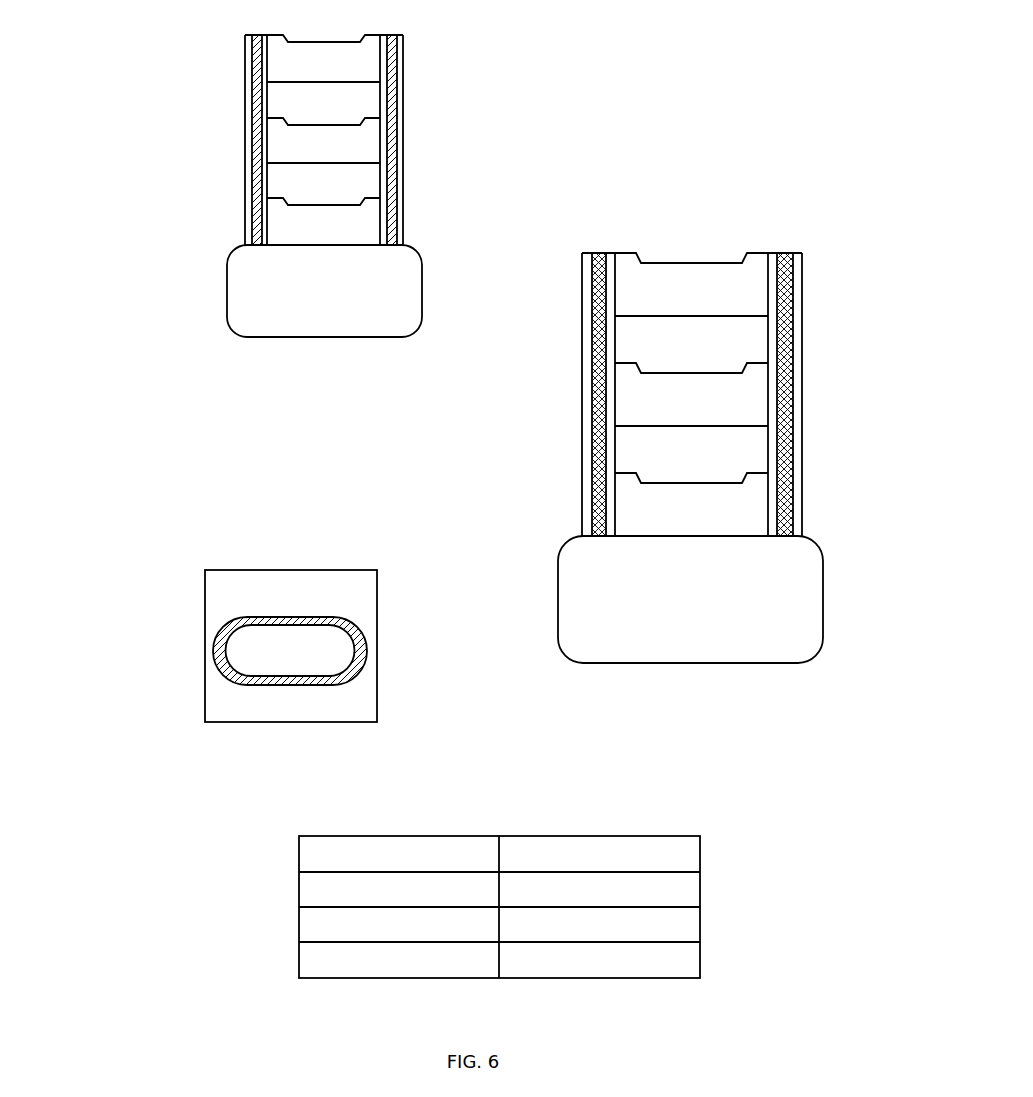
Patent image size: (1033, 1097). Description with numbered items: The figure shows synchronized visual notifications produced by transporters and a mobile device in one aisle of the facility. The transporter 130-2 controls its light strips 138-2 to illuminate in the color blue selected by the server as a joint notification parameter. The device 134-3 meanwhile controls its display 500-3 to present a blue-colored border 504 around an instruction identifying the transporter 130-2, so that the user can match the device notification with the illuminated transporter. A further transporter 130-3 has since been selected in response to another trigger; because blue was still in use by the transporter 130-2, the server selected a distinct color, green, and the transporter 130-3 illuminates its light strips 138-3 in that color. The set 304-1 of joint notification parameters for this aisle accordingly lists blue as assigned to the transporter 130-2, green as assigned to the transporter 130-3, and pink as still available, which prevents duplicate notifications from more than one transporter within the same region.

The light strips 138-2 is at (252, 75).
The transporter 130-2 is at (212, 293).
The light strips 138-3 is at (593, 382).
The transporter 130-3 is at (835, 638).
The device 134-3 is at (259, 609).
The display 500-3 is at (267, 594).
The colored border 504 is at (362, 647).
The set of joint notification parameters 304-1 is at (700, 836).